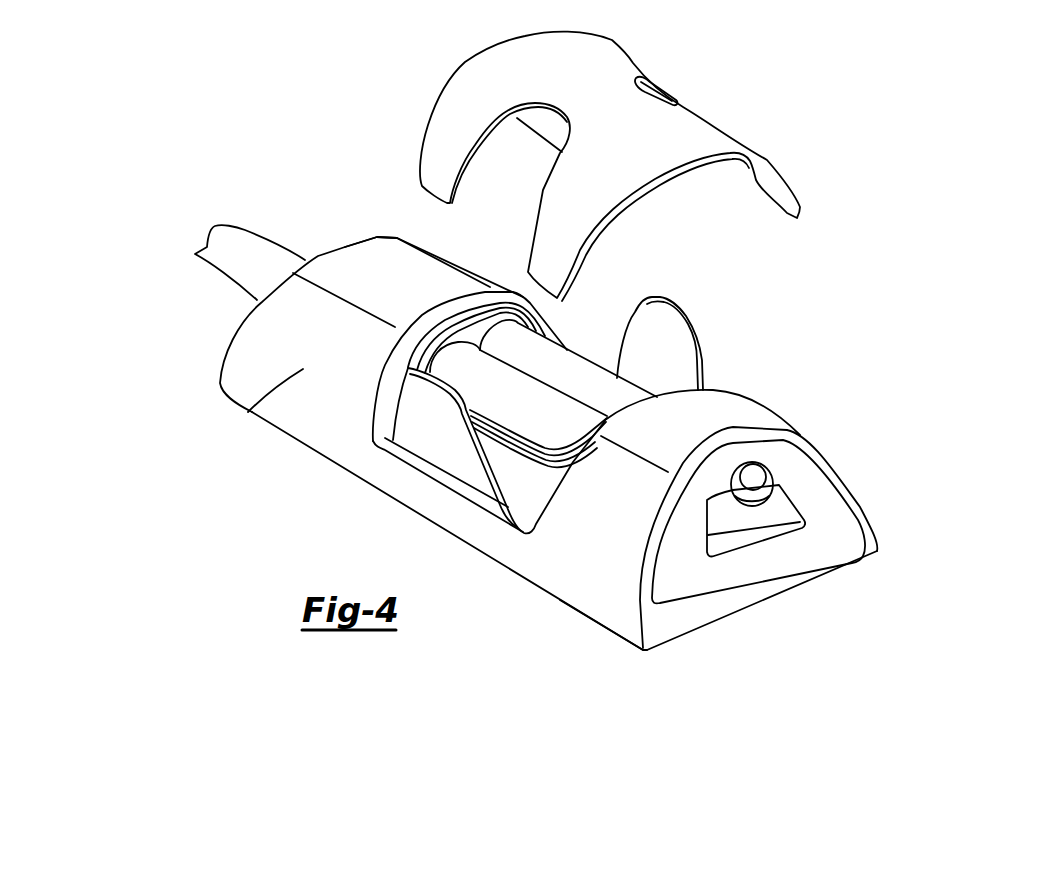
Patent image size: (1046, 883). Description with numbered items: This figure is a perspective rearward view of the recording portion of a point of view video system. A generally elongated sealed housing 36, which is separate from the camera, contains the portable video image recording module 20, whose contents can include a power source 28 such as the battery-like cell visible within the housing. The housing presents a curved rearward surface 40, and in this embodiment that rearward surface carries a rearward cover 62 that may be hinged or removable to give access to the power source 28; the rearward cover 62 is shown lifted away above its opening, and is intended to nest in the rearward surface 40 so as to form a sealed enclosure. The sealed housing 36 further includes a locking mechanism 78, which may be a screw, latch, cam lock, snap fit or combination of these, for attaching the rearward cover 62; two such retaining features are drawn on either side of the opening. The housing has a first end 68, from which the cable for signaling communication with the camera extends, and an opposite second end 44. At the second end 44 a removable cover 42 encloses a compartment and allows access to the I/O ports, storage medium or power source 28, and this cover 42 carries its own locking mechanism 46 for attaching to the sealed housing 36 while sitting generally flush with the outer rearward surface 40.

The portable video image recording module 20 is at (300, 542).
The power source 28 is at (573, 382).
The sealed housing 36 is at (248, 410).
The rearward surface 40 is at (362, 285).
The removable cover 42 is at (820, 522).
The end of the sealed housing 44 is at (602, 633).
The locking mechanism 46 is at (755, 473).
The rearward cover 62 is at (690, 140).
The first end 68 is at (194, 403).
The locking mechanism 78 is at (432, 428).